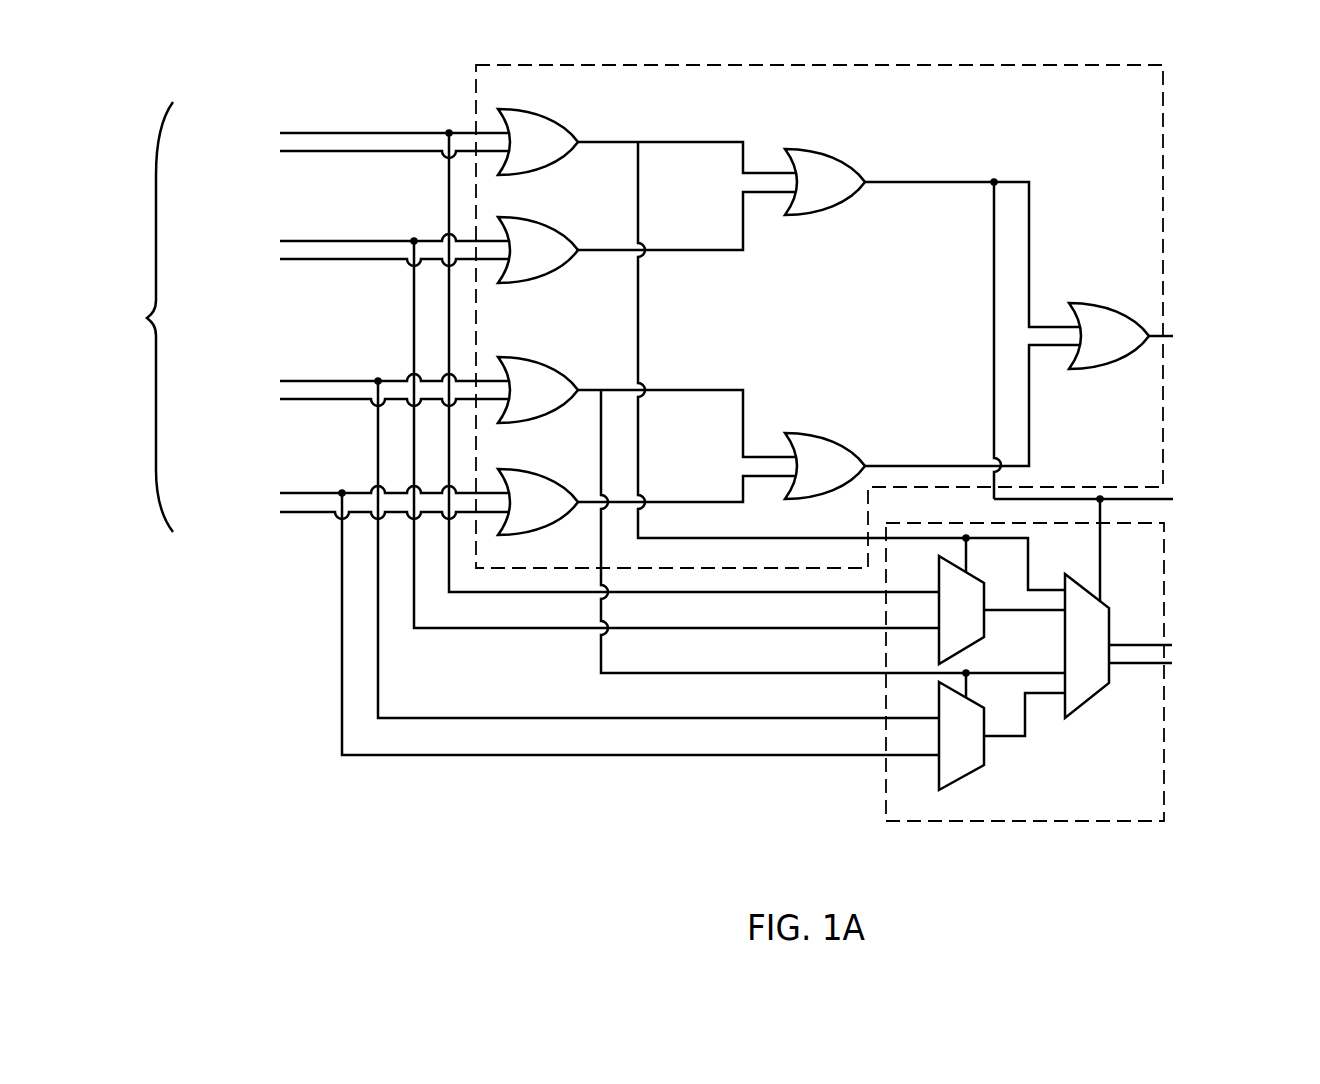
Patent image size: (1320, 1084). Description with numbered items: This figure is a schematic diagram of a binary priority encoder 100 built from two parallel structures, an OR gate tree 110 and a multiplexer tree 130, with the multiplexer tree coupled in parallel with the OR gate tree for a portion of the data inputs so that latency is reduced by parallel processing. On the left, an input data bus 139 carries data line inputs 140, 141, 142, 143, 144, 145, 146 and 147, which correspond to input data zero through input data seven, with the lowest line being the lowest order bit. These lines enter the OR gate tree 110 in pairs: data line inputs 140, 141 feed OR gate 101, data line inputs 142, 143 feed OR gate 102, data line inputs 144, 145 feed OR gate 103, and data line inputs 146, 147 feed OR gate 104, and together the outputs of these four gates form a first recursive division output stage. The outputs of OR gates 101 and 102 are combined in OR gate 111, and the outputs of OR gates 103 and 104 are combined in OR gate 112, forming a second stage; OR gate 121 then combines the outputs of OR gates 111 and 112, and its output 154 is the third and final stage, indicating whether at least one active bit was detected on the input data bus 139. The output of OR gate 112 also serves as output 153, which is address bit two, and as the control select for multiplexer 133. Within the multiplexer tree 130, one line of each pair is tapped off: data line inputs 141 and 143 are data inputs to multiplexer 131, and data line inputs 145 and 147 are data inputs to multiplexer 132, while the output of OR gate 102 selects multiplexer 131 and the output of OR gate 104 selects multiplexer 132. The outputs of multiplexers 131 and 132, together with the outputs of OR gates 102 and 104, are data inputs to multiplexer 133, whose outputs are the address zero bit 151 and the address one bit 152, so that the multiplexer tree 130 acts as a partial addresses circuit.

The binary priority encoder 100 is at (1207, 899).
The OR gate 101 is at (594, 461).
The OR gate 102 is at (611, 346).
The OR gate 103 is at (611, 206).
The OR gate 104 is at (611, 97).
The OR gate tree 110 is at (1226, 176).
The OR gate 111 is at (898, 426).
The OR gate 112 is at (888, 138).
The OR gate 121 is at (1152, 293).
The multiplexer tree 130 is at (1020, 822).
The multiplexer 131 is at (970, 775).
The multiplexer 132 is at (970, 648).
The multiplexer 133 is at (1095, 697).
The input data bus 139 is at (138, 329).
The data line input 140 is at (281, 513).
The data line input 141 is at (281, 492).
The data line input 142 is at (281, 400).
The data line input 143 is at (281, 380).
The data line input 144 is at (281, 260).
The data line input 145 is at (281, 240).
The data line input 146 is at (281, 152).
The data line input 147 is at (281, 132).
The address [0] bit 151 is at (1208, 670).
The address [1] bit 152 is at (1219, 629).
The output 153 is at (1228, 487).
The output 154 is at (1228, 320).